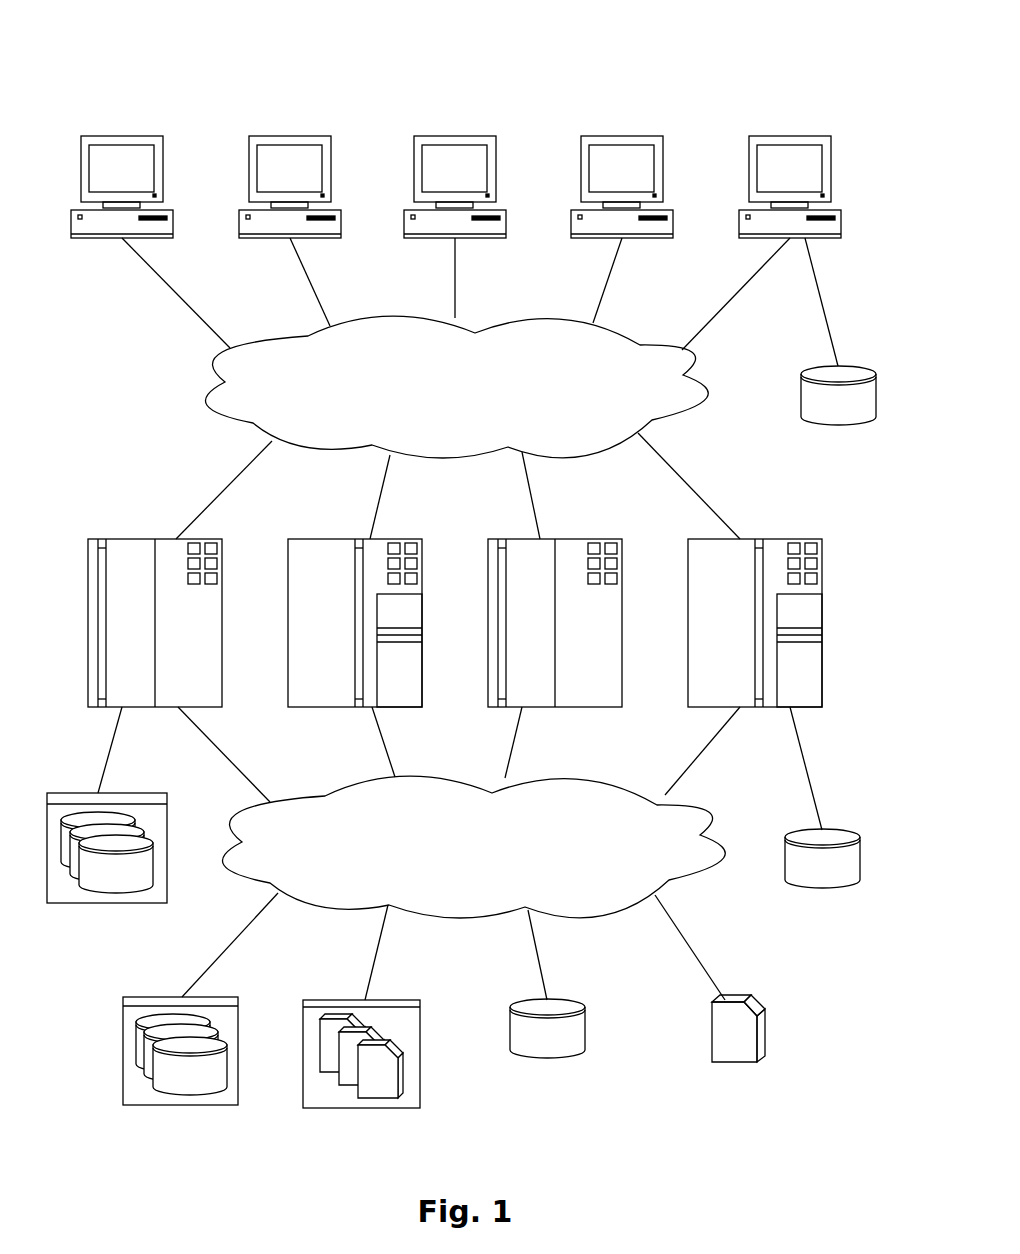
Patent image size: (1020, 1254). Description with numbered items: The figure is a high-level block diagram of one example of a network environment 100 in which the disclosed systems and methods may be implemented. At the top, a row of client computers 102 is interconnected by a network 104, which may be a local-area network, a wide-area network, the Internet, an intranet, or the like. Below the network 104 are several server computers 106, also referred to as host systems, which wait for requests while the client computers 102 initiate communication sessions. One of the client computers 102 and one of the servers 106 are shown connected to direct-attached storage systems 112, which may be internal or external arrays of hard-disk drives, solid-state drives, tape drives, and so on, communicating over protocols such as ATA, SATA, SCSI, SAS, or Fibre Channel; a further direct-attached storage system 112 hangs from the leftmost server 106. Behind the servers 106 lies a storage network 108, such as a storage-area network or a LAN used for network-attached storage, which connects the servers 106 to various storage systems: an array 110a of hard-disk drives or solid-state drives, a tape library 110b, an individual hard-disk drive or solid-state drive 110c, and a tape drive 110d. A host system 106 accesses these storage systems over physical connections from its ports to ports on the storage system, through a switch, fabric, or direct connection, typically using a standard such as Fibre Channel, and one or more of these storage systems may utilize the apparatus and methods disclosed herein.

The network environment 100 is at (192, 69).
The client computer 102 is at (105, 179).
The network 104 is at (625, 399).
The server computer 106 is at (111, 629).
The storage network 108 is at (606, 861).
The array of hard-disk drives or solid-state drives 110a is at (178, 1105).
The tape library 110b is at (362, 1108).
The individual hard-disk drive or solid-state drive 110c is at (547, 1057).
The tape drive 110d is at (735, 1062).
The direct-attached storage system 112 is at (838, 422).